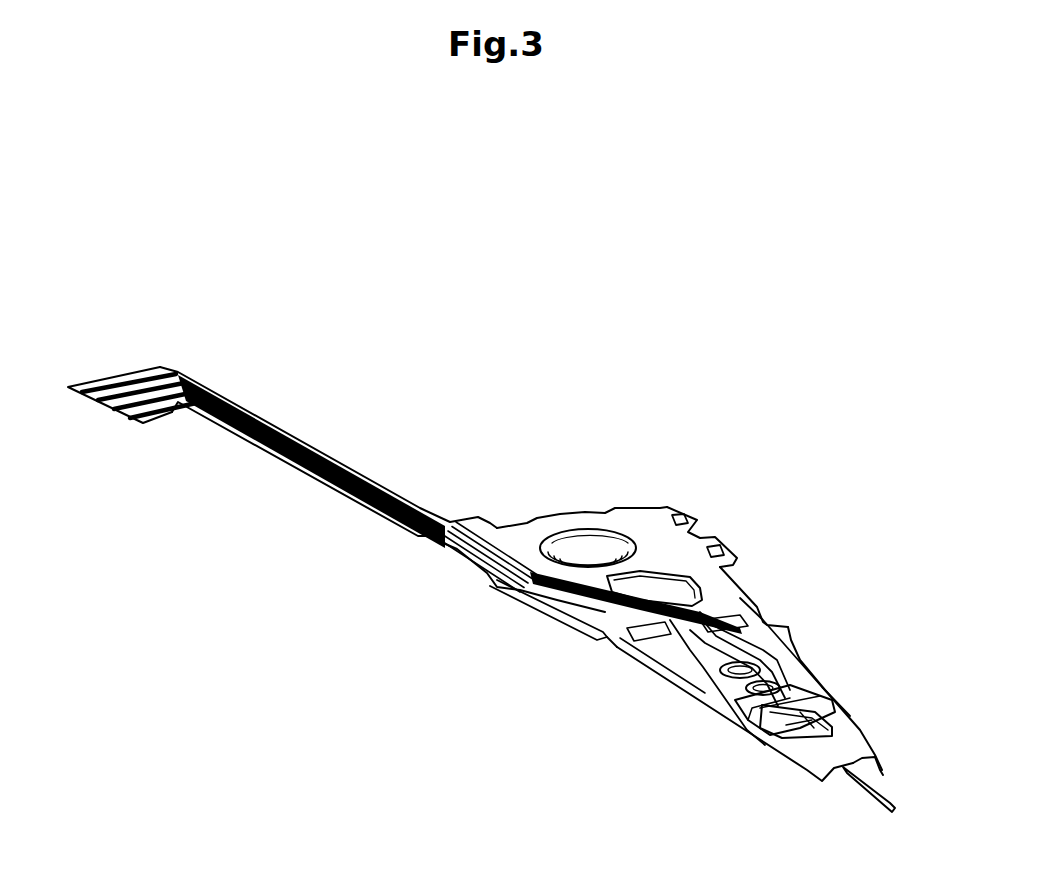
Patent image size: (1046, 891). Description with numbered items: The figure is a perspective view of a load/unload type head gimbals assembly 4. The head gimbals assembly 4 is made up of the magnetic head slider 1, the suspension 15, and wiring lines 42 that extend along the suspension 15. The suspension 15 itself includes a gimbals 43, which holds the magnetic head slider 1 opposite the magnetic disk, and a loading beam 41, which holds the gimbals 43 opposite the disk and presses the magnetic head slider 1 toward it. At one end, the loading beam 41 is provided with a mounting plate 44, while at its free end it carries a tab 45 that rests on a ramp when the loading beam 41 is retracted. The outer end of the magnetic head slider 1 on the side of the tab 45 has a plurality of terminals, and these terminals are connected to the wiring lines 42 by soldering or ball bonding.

The magnetic head slider 1 is at (760, 731).
The head gimbals assembly 4 is at (510, 428).
The suspension 15 is at (763, 576).
The loading beam 41 is at (786, 636).
The wiring lines 42 is at (367, 478).
The gimbals 43 is at (828, 683).
The mounting plate 44 is at (628, 503).
The tab 45 is at (896, 810).